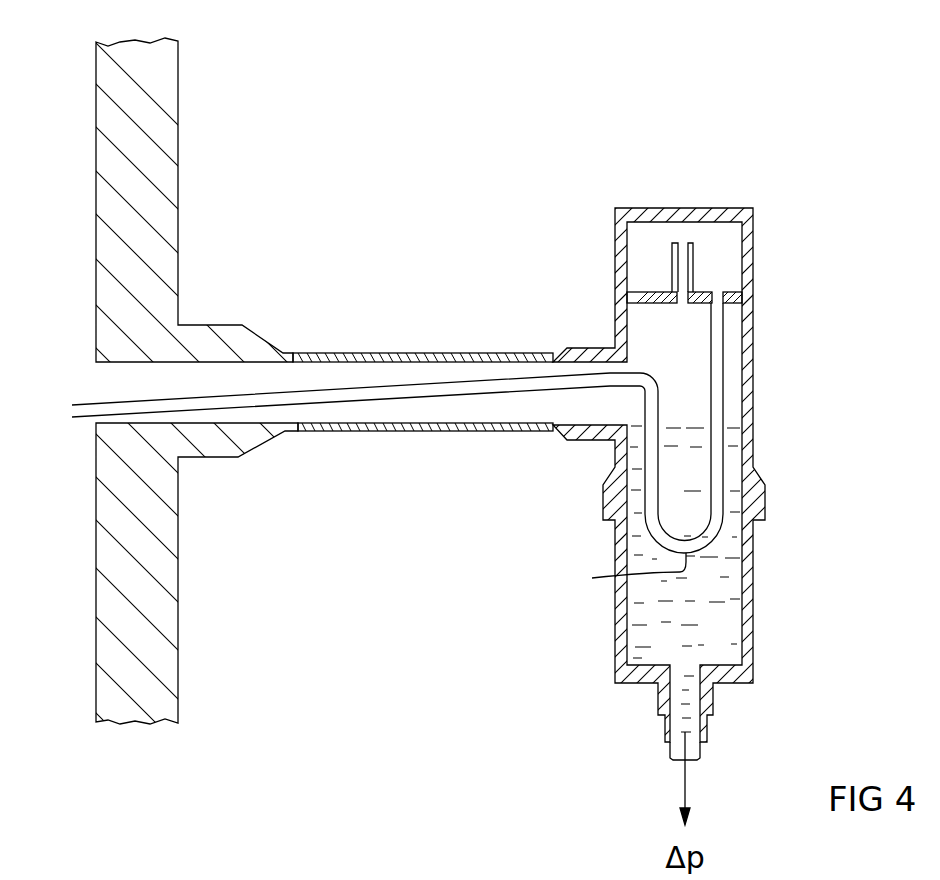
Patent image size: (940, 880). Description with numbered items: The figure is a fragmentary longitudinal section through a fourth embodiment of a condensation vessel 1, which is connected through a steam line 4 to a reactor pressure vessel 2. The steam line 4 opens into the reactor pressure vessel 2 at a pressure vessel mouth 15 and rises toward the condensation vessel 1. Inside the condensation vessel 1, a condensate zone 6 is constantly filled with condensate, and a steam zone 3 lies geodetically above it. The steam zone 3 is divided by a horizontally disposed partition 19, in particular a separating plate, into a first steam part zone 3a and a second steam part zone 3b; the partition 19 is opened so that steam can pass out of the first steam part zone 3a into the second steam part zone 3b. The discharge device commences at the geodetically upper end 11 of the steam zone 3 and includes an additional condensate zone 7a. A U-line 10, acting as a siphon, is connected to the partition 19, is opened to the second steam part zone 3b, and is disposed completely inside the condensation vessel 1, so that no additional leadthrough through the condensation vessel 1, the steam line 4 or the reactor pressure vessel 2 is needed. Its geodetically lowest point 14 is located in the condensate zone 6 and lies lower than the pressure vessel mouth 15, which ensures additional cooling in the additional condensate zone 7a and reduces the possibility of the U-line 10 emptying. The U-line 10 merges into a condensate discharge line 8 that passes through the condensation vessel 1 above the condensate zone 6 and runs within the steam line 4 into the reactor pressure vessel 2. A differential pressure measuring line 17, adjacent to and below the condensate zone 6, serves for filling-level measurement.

The condensation vessel 1 is at (506, 420).
The reactor pressure vessel 2 is at (152, 637).
The steam zone 3 is at (741, 343).
The first steam part zone 3a is at (642, 338).
The second steam part zone 3b is at (652, 240).
The steam line 4 is at (370, 368).
The condensate zone 6 is at (720, 620).
The additional condensate zone 7a is at (718, 404).
The condensate discharge line 8 is at (491, 385).
The U-line 10 is at (722, 532).
The geodetically upper end 11 is at (716, 235).
The geodetically lowest point 14 is at (621, 574).
The pressure vessel mouth 15 is at (272, 415).
The differential pressure measuring line 17 is at (700, 752).
The partition 19 is at (627, 291).